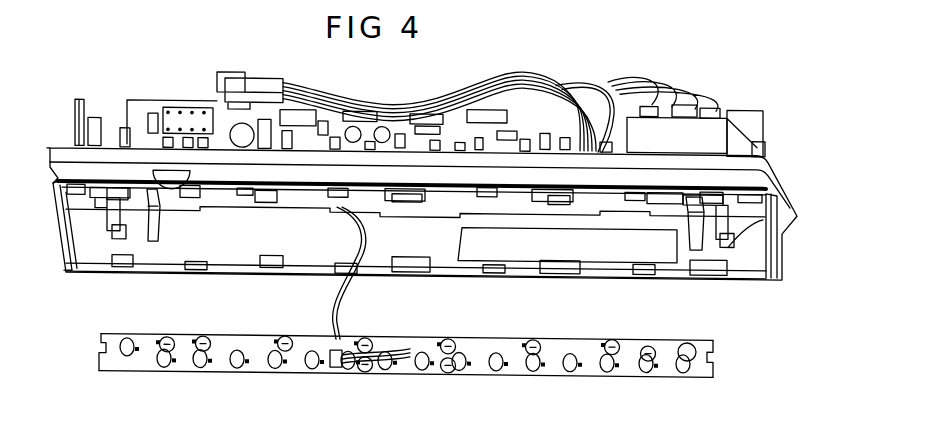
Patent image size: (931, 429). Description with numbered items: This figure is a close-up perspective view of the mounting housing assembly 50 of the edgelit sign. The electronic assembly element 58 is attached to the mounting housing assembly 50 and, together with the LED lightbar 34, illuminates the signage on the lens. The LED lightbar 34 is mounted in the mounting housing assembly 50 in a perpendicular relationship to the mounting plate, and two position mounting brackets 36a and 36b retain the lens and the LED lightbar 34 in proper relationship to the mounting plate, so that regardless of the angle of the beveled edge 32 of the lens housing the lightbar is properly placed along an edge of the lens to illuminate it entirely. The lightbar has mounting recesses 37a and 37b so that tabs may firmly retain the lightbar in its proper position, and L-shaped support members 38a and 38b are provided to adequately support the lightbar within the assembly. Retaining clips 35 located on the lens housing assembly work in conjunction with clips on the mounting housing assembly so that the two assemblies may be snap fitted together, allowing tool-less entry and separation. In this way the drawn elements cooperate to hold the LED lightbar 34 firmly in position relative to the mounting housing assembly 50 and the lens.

The mounting housing assembly 50 is at (793, 262).
The beveled angled edge 32 is at (765, 232).
The LED lightbar 34 is at (437, 378).
The retaining clips 35 is at (678, 345).
The two position mounting bracket 36a is at (108, 220).
The two position mounting bracket 36b is at (768, 191).
The mounting recess 37a is at (103, 348).
The mounting recess 37b is at (715, 357).
The L-shaped support member 38a is at (158, 221).
The L-shaped support member 38b is at (690, 240).
The electronic assembly element 58 is at (588, 62).